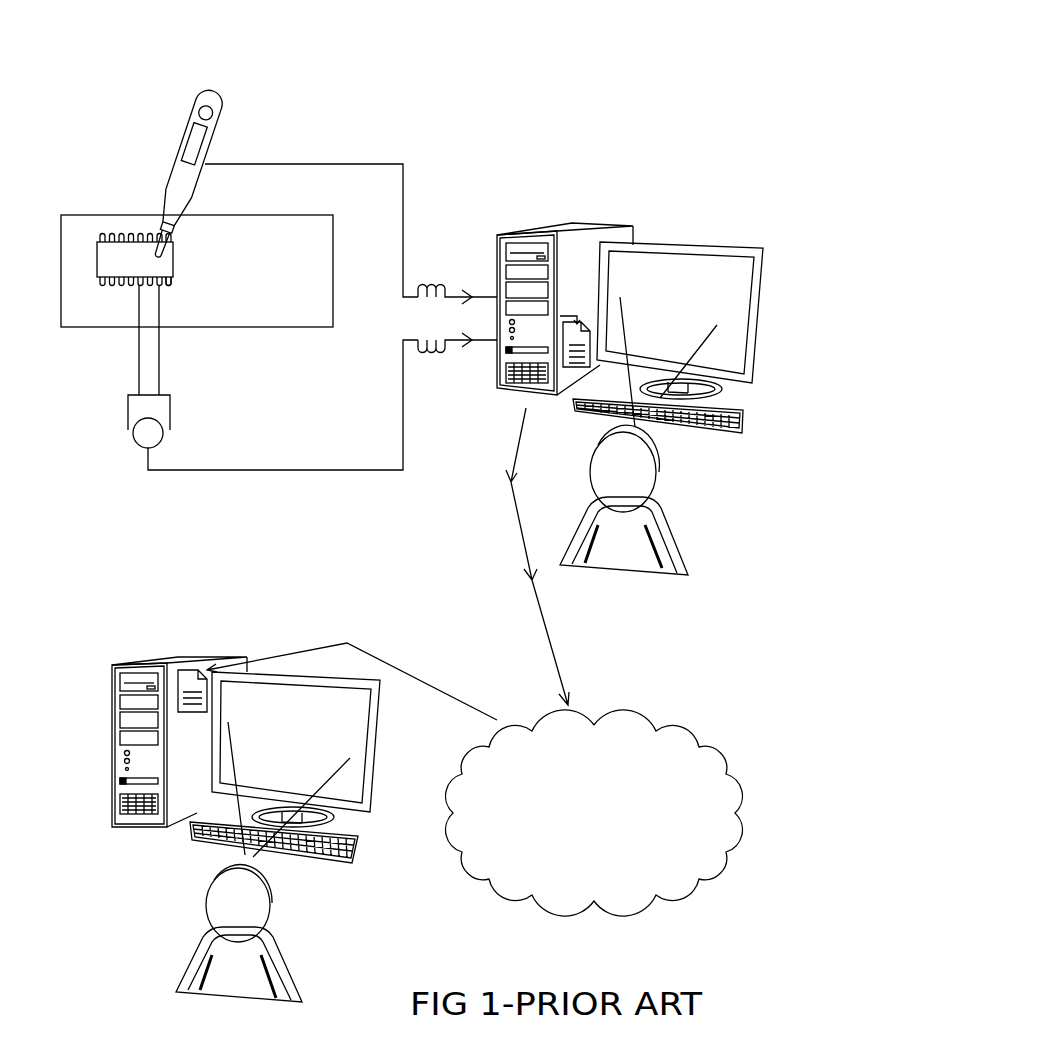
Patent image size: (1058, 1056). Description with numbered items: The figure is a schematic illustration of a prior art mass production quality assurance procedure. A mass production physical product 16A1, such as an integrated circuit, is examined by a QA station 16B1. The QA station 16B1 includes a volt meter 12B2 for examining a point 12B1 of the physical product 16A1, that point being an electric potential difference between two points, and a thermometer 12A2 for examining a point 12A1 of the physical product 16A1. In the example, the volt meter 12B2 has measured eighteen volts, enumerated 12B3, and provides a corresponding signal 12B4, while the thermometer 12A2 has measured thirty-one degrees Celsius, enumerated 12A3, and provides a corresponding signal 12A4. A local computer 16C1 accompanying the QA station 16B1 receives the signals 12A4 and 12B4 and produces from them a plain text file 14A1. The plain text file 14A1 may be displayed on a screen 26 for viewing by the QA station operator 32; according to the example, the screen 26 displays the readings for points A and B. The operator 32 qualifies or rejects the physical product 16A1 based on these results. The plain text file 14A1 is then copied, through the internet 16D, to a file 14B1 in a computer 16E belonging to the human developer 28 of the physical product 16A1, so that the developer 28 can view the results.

The point 12A1 is at (165, 261).
The thermometer 12A2 is at (220, 102).
The measured temperature value 12A3 is at (348, 152).
The temperature signal 12A4 is at (433, 287).
The point 12B1 is at (173, 281).
The volt meter 12B2 is at (137, 441).
The measured voltage value 12B3 is at (322, 465).
The voltage signal 12B4 is at (433, 355).
The physical product 16A1 is at (98, 223).
The QA station 16B1 is at (197, 409).
The local computer 16C1 is at (566, 233).
The screen 26 is at (669, 264).
The plain text file 14A1 is at (578, 372).
The QA station operator 32 is at (642, 476).
The internet 16D is at (632, 745).
The computer 16E is at (165, 661).
The file 14B1 is at (192, 671).
The human developer 28 is at (257, 910).